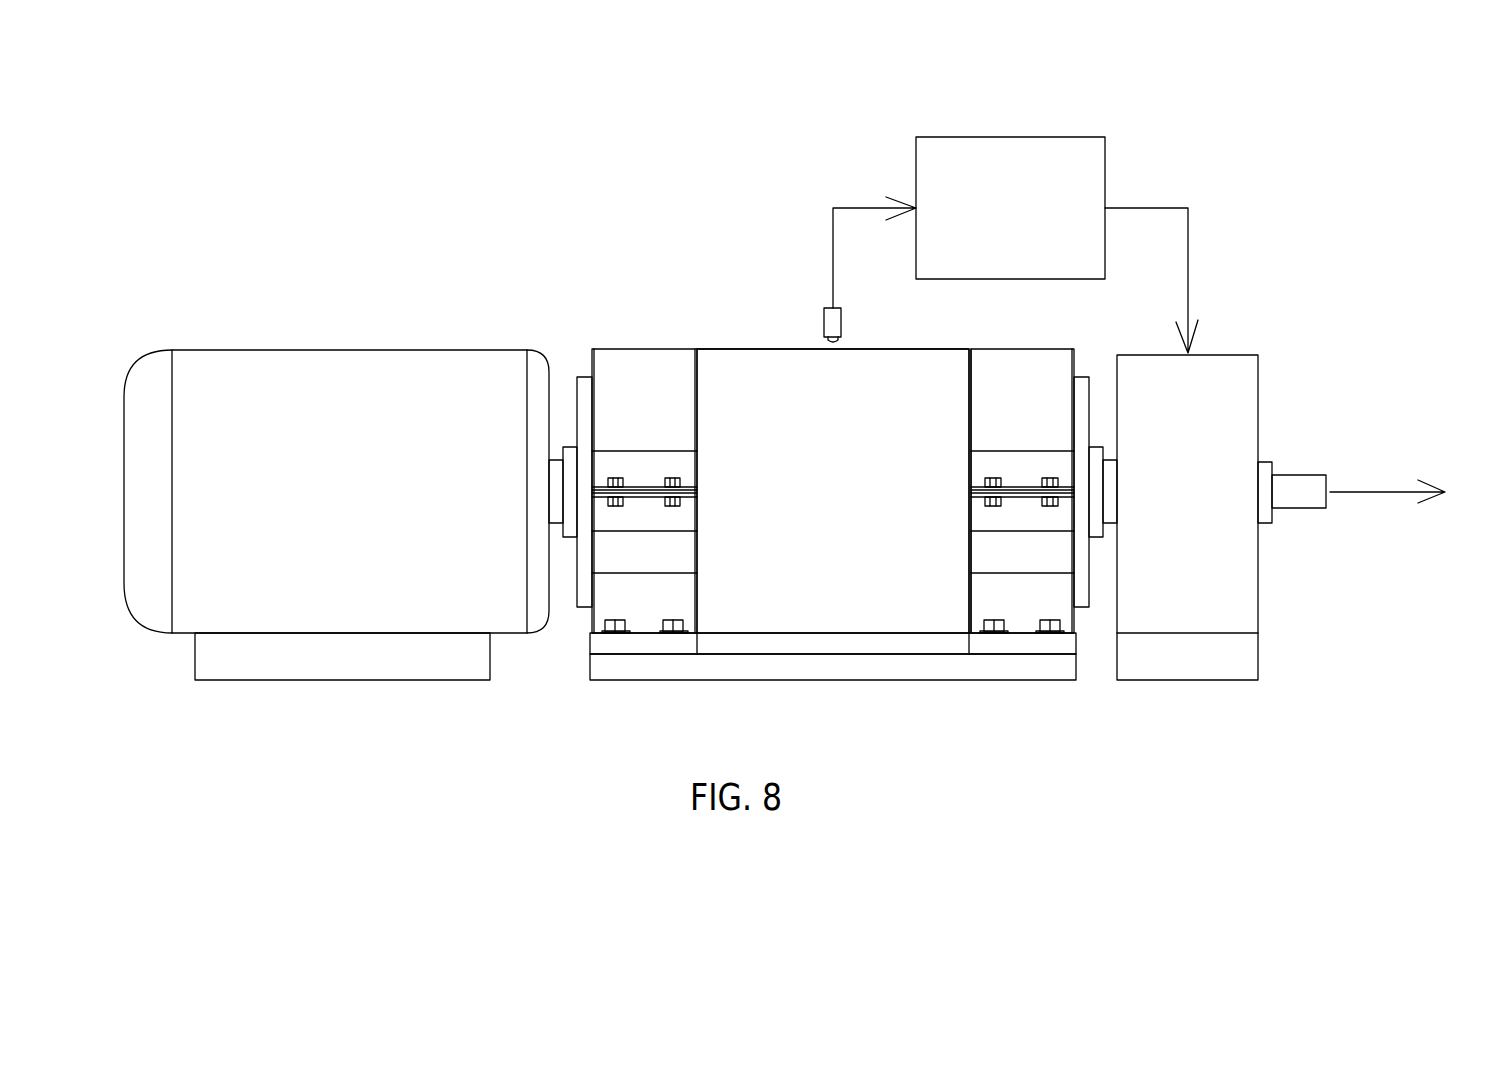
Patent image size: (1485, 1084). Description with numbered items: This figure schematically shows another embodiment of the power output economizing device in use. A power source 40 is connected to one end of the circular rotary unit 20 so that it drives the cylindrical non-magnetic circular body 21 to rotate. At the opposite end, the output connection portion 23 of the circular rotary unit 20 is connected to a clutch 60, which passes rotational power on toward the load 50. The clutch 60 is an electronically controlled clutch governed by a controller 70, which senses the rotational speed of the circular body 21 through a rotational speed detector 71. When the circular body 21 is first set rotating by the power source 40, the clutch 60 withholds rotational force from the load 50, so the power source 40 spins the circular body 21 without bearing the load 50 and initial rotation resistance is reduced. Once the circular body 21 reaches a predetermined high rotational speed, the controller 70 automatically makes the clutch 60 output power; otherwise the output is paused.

The circular rotary unit 20 is at (781, 349).
The circular body 21 is at (753, 376).
The output connection portion 23 is at (1097, 532).
The power source 40 is at (384, 373).
The load 50 is at (1387, 481).
The clutch 60 is at (1223, 388).
The controller 70 is at (1026, 167).
The rotational speed detector 71 is at (832, 320).